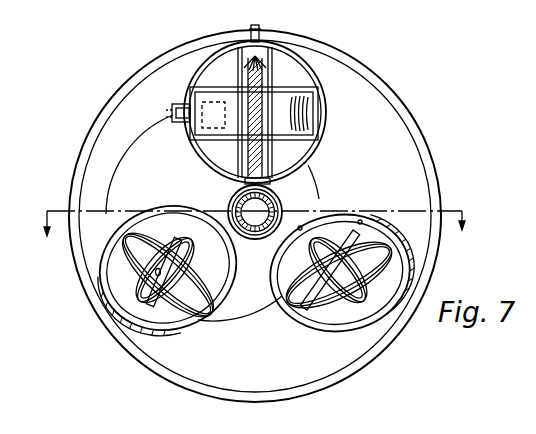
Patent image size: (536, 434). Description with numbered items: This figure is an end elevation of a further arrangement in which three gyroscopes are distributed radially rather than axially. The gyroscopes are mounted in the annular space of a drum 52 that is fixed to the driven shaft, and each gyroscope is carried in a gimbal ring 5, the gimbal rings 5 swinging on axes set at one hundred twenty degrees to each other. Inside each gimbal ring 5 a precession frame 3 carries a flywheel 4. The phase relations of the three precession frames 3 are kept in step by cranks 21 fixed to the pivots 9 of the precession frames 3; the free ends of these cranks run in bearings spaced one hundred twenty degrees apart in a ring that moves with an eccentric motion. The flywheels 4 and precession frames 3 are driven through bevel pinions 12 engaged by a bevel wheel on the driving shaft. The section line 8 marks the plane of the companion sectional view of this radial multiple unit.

The precession frame 3 is at (203, 138).
The flywheel 4 is at (227, 122).
The gimbal ring 5 is at (301, 58).
The section line 8- 8 is at (254, 225).
The pivot 9 is at (183, 128).
The bevel pinion 12 is at (255, 240).
The crank 21 is at (173, 105).
The drum 52 is at (412, 138).